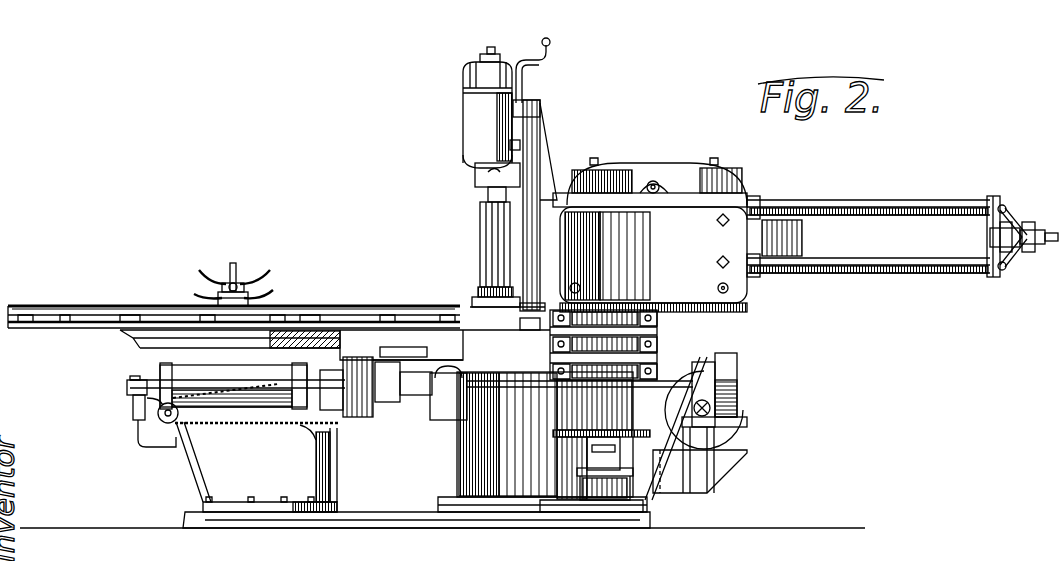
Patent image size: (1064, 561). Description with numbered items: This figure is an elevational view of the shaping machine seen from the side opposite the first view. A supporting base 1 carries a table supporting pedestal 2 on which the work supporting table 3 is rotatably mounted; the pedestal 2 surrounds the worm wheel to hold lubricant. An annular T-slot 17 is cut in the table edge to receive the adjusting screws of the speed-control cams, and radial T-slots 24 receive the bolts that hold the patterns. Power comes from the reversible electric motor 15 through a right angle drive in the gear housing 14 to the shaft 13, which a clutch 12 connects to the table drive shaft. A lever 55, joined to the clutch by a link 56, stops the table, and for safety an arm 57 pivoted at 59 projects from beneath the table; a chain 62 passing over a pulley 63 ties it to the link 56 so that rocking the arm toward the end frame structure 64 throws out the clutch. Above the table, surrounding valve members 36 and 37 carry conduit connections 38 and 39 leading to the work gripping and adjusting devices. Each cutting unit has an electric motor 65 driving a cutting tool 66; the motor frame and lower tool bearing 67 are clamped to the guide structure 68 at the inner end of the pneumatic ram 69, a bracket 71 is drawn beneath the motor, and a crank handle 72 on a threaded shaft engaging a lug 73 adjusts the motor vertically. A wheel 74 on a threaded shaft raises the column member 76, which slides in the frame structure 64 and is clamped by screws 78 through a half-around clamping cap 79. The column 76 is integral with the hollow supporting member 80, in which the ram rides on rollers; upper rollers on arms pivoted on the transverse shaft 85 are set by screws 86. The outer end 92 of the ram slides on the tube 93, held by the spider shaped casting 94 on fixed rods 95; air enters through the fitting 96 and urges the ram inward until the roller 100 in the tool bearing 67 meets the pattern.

The supporting base 1 is at (393, 518).
The table supporting pedestal 2 is at (314, 470).
The work supporting table 3 is at (36, 306).
The clutch 12 is at (372, 420).
The shaft 13 is at (520, 388).
The gear housing 14 is at (729, 373).
The electric motor 15 is at (747, 410).
The annular T-slot 17 is at (80, 328).
The radial T-slots 24 is at (73, 306).
The valve member 36 is at (216, 300).
The valve member 37 is at (221, 285).
The conduit connections 38 is at (270, 291).
The conduit connections 39 is at (240, 263).
The lever 55 is at (160, 382).
The link 56 is at (178, 386).
The arm 57 is at (405, 352).
The pivot 59 is at (373, 370).
The chain 62 is at (280, 425).
The pulley 63 is at (165, 415).
The end frame structure 64 is at (483, 470).
The electric motor 65 is at (463, 130).
The cutting tool 66 is at (480, 224).
The lower tool bearing 67 is at (516, 300).
The guide structure 68 is at (546, 160).
The pneumatic ram 69 is at (857, 200).
The lower bracket 71 is at (515, 176).
The crank handle 72 is at (550, 47).
The lug 73 is at (510, 145).
The wheel 74 is at (573, 433).
The column member 76 is at (622, 408).
The screws 78 is at (652, 342).
The half-around clamping cap 79 is at (550, 347).
The hollow supporting member 80 is at (703, 293).
The upper central transverse shaft 85 is at (659, 188).
The screws 86 is at (598, 166).
The outer end of the ram 92 is at (992, 198).
The tube 93 is at (990, 238).
The spider shaped casting 94 is at (1012, 250).
The fixed rods 95 is at (858, 258).
The fitting 96 is at (1046, 230).
The roller 100 is at (478, 300).